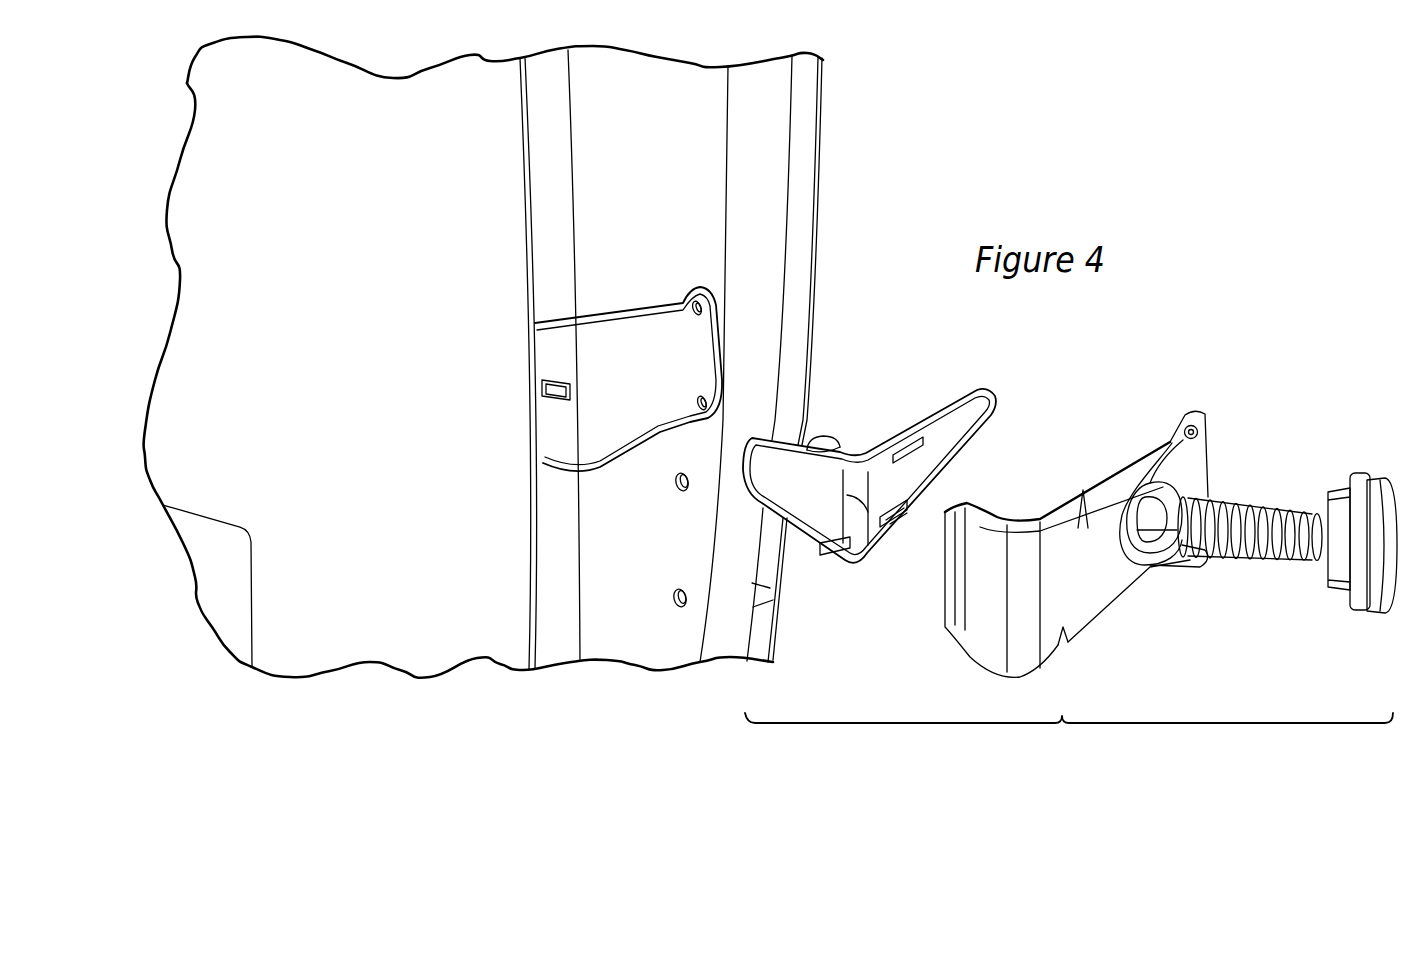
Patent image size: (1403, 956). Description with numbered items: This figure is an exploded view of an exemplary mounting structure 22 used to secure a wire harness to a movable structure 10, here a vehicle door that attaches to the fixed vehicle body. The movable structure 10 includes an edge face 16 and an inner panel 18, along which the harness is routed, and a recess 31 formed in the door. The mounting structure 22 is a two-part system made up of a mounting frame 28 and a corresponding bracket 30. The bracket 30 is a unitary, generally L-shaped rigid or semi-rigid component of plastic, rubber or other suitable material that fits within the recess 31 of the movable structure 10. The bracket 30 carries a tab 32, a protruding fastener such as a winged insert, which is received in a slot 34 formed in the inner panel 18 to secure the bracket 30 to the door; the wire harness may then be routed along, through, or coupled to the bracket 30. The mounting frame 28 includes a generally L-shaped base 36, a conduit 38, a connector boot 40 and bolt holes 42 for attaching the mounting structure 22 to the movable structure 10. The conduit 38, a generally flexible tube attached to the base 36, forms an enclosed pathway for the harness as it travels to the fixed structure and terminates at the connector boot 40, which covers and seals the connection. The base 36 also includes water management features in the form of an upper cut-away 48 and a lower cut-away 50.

The movable structure 10 is at (150, 302).
The edge face 16 is at (656, 550).
The inner panel 18 is at (361, 430).
The mounting structure 22 is at (1071, 560).
The mounting frame 28 is at (1108, 432).
The bracket 30 is at (923, 420).
The recess 31 is at (654, 386).
The tab 32 is at (820, 437).
The slot 34 is at (540, 393).
The base 36 is at (1106, 576).
The conduit 38 is at (1277, 507).
The connector boot 40 is at (1370, 480).
The bolt holes 42 is at (1197, 431).
The upper cut-away 48 is at (1083, 493).
The lower cut-away 50 is at (1065, 642).